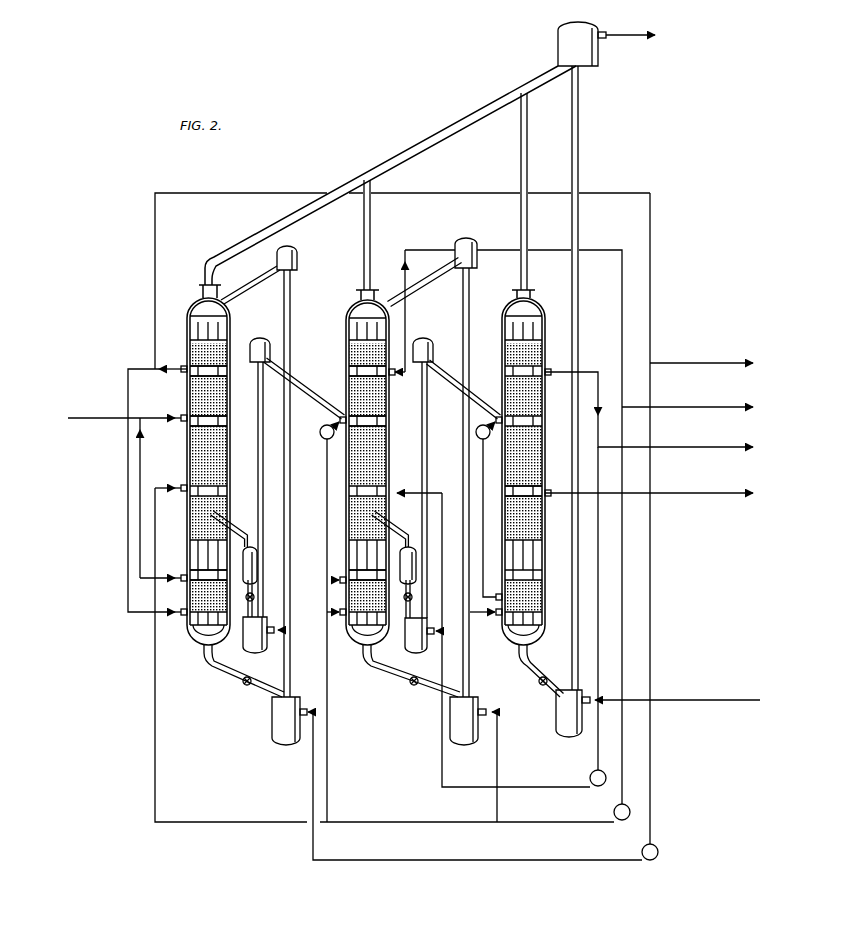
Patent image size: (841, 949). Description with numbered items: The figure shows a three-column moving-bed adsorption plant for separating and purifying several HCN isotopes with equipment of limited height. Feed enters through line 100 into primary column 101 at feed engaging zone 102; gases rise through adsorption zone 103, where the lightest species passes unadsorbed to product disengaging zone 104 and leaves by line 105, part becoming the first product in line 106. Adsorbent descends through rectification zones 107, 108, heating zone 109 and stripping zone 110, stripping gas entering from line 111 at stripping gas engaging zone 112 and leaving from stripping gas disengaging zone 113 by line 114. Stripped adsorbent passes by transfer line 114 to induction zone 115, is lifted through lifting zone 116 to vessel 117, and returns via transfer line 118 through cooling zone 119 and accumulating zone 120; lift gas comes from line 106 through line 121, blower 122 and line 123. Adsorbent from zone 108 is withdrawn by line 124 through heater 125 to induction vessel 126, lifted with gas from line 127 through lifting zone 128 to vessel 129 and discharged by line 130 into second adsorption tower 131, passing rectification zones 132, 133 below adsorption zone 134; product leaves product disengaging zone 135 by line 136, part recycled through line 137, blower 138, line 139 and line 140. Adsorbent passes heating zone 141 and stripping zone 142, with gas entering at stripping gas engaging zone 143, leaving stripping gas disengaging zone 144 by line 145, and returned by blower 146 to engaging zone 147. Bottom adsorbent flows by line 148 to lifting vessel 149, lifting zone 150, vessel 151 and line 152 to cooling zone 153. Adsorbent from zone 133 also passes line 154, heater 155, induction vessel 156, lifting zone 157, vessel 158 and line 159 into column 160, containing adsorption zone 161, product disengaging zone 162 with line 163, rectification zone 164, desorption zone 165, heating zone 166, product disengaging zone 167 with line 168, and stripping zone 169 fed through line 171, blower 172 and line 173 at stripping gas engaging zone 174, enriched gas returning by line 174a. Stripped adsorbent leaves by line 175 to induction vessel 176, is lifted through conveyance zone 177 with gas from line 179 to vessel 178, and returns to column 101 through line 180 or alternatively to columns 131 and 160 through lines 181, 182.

The feed line 100 is at (78, 419).
The primary column 101 is at (195, 297).
The feed engaging zone 102 is at (187, 424).
The adsorption zone 103 is at (189, 400).
The product disengaging zone 104 is at (187, 378).
The overhead line 105 is at (153, 345).
The first product line 106 is at (672, 363).
The rectification zone 107 is at (189, 462).
The rectification zone 108 is at (190, 499).
The heating zone 109 is at (205, 553).
The stripping zone 110 is at (189, 598).
The stripping gas line 111 is at (128, 530).
The stripping gas engaging zone 112 is at (182, 630).
The stripping gas disengaging zone 113 is at (187, 577).
The transfer line 114 is at (140, 560).
The induction zone 115 is at (272, 735).
The lifting zone 116 is at (293, 664).
The vessel 117 is at (292, 249).
The transfer line 118 is at (246, 300).
The cooling zone 119 is at (214, 334).
The accumulating zone 120 is at (189, 352).
The line 121 is at (650, 795).
The blower 122 is at (647, 861).
The line 123 is at (366, 861).
The line 124 is at (248, 530).
The heater 125 is at (254, 558).
The induction vessel 126 is at (253, 654).
The line 127 is at (330, 618).
The lifting zone 128 is at (257, 446).
The vessel 129 is at (268, 340).
The line 130 is at (305, 388).
The second adsorption tower 131 is at (352, 302).
The rectification zone 132 is at (389, 451).
The rectification zone 133 is at (389, 506).
The adsorption zone 134 is at (389, 396).
The product disengaging zone 135 is at (346, 374).
The line 136 is at (406, 318).
The line 137 is at (623, 590).
The blower 138 is at (619, 821).
The line 139 is at (446, 823).
The line 140 is at (328, 745).
The heating zone 141 is at (346, 558).
The stripping zone 142 is at (348, 596).
The stripping gas engaging zone 143 is at (352, 638).
The stripping gas disengaging zone 144 is at (346, 576).
The line 145 is at (327, 497).
The blower 146 is at (324, 425).
The engaging zone 147 is at (389, 421).
The line 148 is at (386, 674).
The lifting vessel 149 is at (450, 735).
The lifting zone 150 is at (470, 681).
The vessel 151 is at (472, 242).
The line 152 is at (417, 288).
The cooling zone 153 is at (348, 350).
The line 154 is at (392, 531).
The heater 155 is at (414, 560).
The induction vessel 156 is at (414, 655).
The lifting zone 157 is at (427, 452).
The vessel 158 is at (425, 339).
The line 159 is at (449, 384).
The column 160 is at (510, 301).
The adsorption zone 161 is at (540, 397).
The product disengaging zone 162 is at (546, 351).
The line 163 is at (598, 372).
The rectification zone 164 is at (538, 452).
The desorption zone 165 is at (540, 516).
The heating zone 166 is at (540, 556).
The product disengaging zone 167 is at (542, 489).
The line 168 is at (671, 495).
The stripping zone 169 is at (540, 592).
The line 171 is at (598, 652).
The blower 172 is at (596, 789).
The line 173 is at (511, 777).
The stripping gas engaging zone 174 is at (540, 619).
The line 174a is at (490, 618).
The line 175 is at (536, 677).
The induction vessel 176 is at (560, 735).
The conveyance zone 177 is at (578, 178).
The vessel 178 is at (590, 66).
The line 179 is at (672, 700).
The line 180 is at (398, 156).
The line 181 is at (367, 234).
The line 182 is at (528, 138).